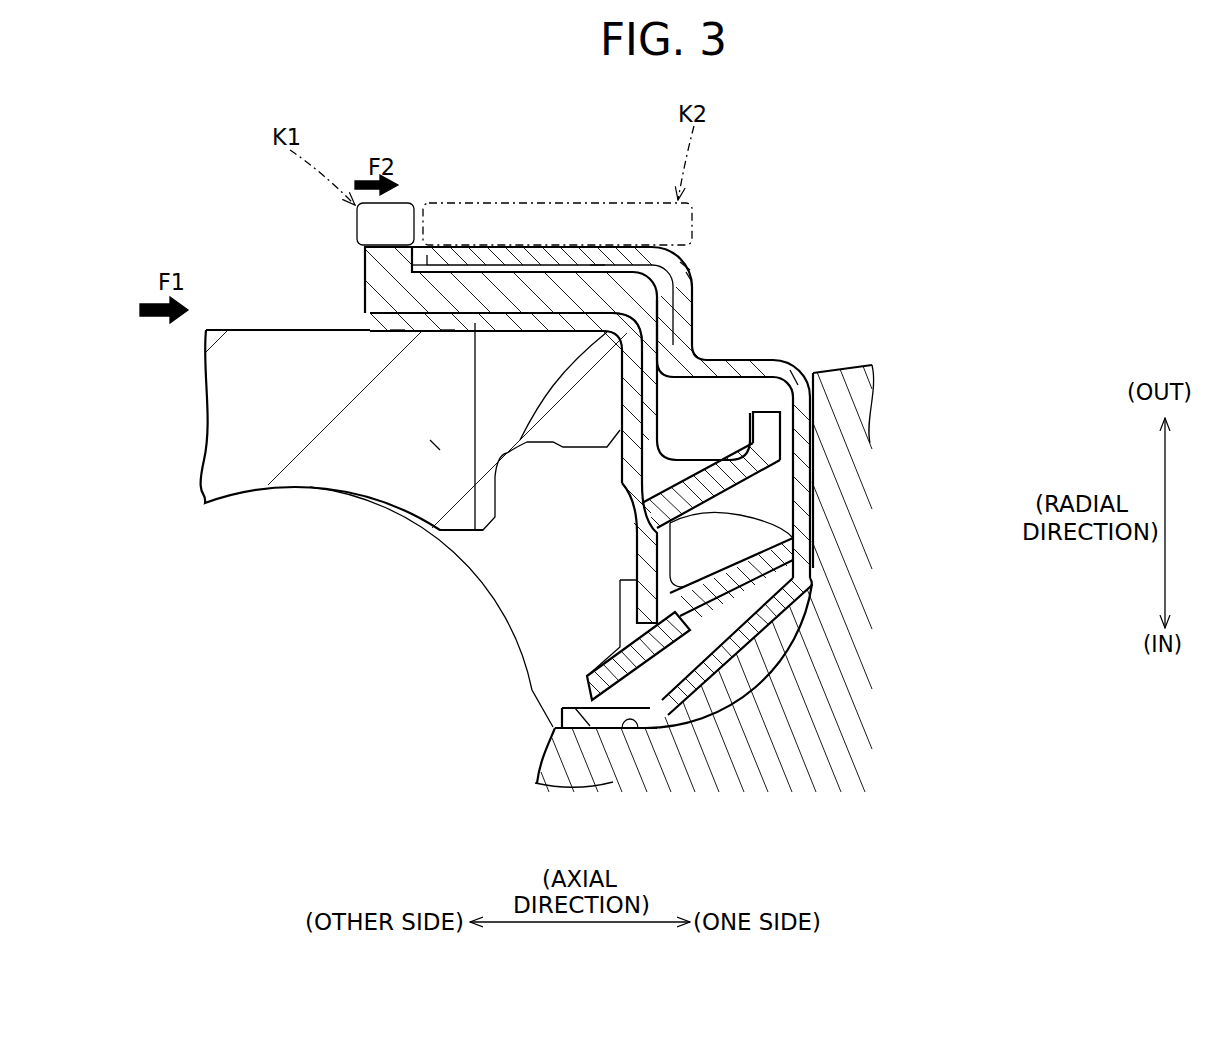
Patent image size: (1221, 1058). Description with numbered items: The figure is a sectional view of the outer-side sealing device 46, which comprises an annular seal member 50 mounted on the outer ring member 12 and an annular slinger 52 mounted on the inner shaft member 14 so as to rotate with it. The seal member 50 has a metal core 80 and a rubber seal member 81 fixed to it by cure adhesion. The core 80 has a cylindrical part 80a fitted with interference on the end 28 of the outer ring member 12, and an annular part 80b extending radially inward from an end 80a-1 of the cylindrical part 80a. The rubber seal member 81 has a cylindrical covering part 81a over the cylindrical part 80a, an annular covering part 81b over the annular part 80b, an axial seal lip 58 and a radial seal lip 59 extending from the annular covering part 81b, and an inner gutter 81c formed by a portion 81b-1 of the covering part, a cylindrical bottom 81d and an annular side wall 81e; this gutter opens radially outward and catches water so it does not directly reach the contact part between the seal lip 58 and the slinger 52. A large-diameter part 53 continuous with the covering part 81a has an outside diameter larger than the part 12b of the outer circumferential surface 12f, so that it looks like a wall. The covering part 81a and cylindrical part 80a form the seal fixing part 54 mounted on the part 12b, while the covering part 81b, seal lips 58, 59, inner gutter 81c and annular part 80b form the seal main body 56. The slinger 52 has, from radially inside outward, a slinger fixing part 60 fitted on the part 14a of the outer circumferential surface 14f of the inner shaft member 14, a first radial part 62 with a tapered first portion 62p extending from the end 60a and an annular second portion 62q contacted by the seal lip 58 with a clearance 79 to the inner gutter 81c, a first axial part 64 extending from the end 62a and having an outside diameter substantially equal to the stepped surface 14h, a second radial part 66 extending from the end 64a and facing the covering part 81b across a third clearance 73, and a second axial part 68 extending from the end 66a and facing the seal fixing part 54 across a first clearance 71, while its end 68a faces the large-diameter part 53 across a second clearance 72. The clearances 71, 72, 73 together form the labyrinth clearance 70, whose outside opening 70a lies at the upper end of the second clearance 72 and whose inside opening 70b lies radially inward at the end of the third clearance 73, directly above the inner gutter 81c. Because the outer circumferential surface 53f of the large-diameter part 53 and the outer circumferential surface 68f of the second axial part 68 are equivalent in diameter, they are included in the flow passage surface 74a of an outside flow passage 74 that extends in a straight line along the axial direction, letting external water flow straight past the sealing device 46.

The outer ring member 12 is at (218, 325).
The outer circumferential surface 12f is at (259, 325).
The part of outer circumferential surface 12b is at (648, 247).
The inner shaft member 14 is at (822, 712).
The part of outer circumferential surface 14a is at (627, 713).
The outer circumferential surface 14f is at (553, 725).
The stepped surface 14h is at (832, 372).
The end 28 is at (432, 443).
The outer-side sealing device 46 is at (690, 277).
The seal member 50 is at (395, 336).
The slinger 52 is at (693, 283).
The large-diameter part 53 is at (368, 262).
The outer circumferential surface 53f is at (380, 246).
The seal fixing part 54 is at (447, 336).
The seal main body 56 is at (620, 478).
The seal lip 58 is at (817, 570).
The seal lip 59 is at (597, 710).
The slinger fixing part 60 is at (570, 713).
The end 60a is at (743, 700).
The first radial part 62 is at (814, 535).
The end 62a is at (790, 375).
The first portion 62p is at (780, 633).
The second portion 62q is at (806, 457).
The first axial part 64 is at (713, 368).
The end 64a is at (668, 327).
The second radial part 66 is at (697, 278).
The end 66a is at (688, 258).
The second axial part 68 is at (513, 256).
The end 68a is at (428, 256).
The outer circumferential surface 68f is at (537, 250).
The labyrinth clearance 70 is at (468, 268).
The outside opening 70a is at (412, 245).
The inside opening 70b is at (623, 350).
The first clearance 71 is at (597, 262).
The second clearance 72 is at (420, 247).
The third clearance 73 is at (694, 292).
The outside flow passage 74 is at (352, 222).
The flow passage surface 74a is at (582, 246).
The clearance 79 is at (794, 440).
The core 80 is at (498, 494).
The cylindrical part 80a is at (466, 562).
The end 80a-1 is at (518, 450).
The annular part 80b is at (618, 600).
The rubber seal member 81 is at (675, 603).
The cylindrical covering part 81a is at (552, 270).
The annular covering part 81b is at (660, 397).
The portion of annular covering part 81b-1 is at (659, 428).
The inner gutter 81c is at (760, 358).
The bottom 81d is at (727, 473).
The side wall 81e is at (767, 427).